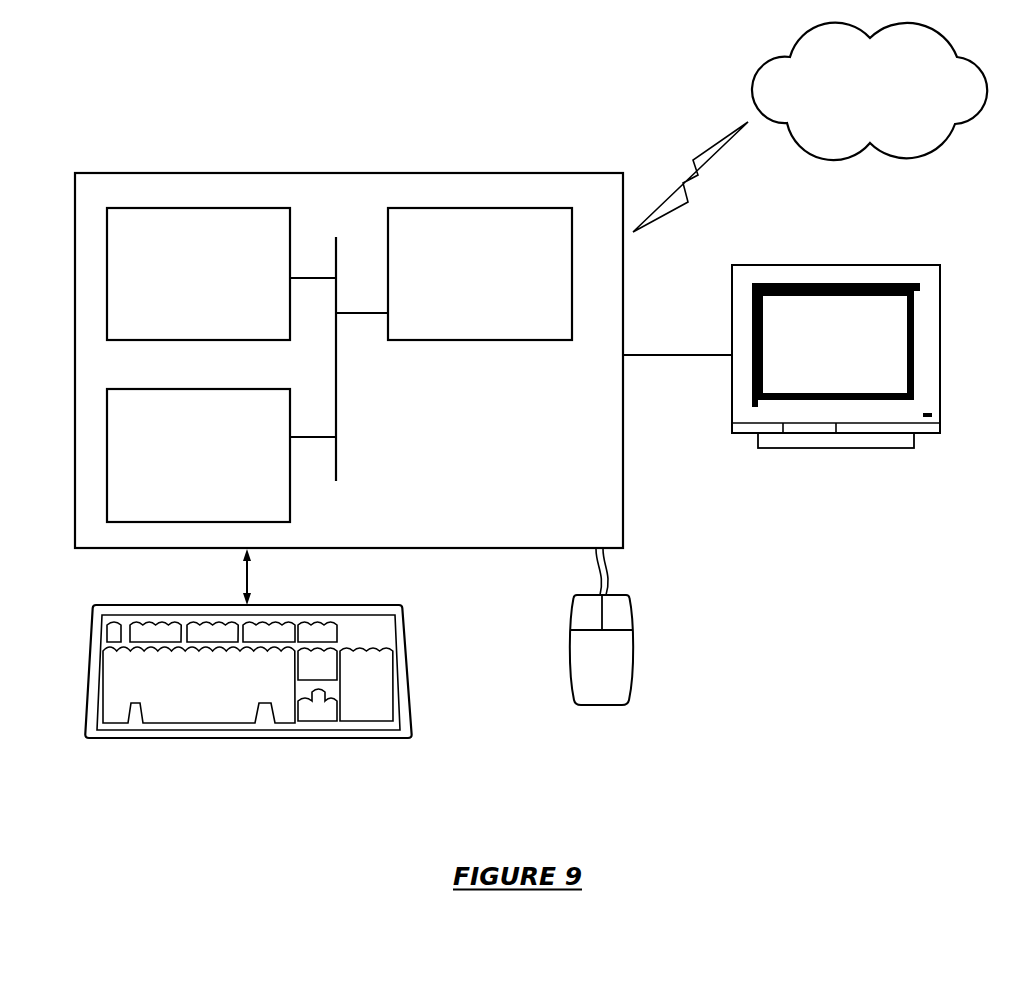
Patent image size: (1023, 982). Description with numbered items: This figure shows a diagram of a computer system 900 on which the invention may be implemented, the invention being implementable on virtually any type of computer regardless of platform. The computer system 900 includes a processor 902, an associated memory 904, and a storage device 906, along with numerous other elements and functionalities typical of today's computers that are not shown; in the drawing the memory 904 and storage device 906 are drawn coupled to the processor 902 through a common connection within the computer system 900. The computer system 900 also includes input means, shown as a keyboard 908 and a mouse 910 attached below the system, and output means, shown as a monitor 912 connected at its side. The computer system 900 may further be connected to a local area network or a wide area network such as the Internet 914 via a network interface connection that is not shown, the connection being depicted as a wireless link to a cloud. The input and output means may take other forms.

The computer system 900 is at (122, 161).
The processor 902 is at (478, 285).
The memory 904 is at (184, 285).
The storage device 906 is at (182, 465).
The keyboard 908 is at (176, 703).
The mouse 910 is at (586, 666).
The monitor 912 is at (816, 350).
The wide area network 914 is at (864, 110).